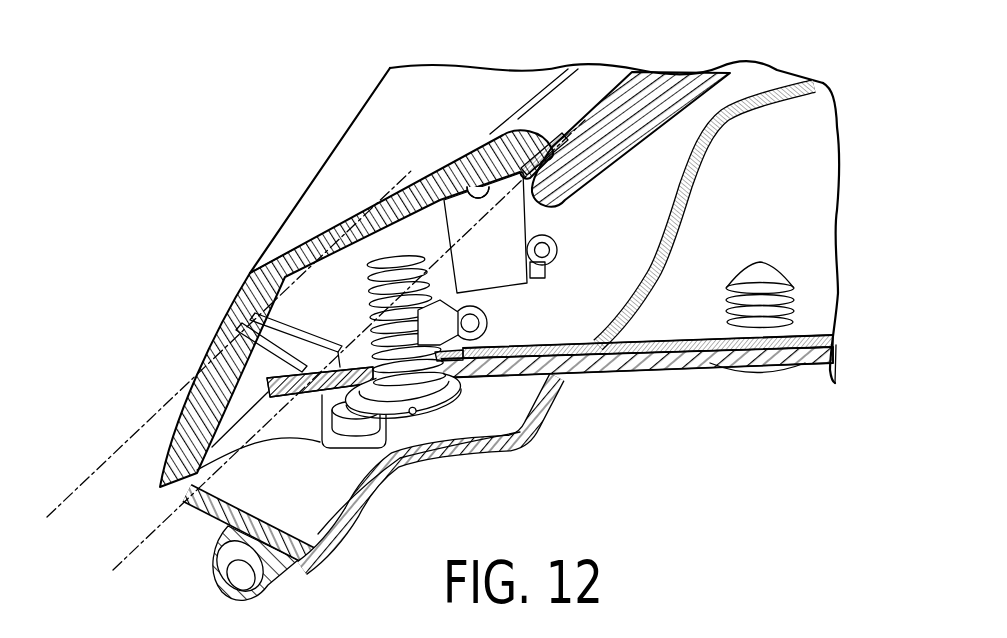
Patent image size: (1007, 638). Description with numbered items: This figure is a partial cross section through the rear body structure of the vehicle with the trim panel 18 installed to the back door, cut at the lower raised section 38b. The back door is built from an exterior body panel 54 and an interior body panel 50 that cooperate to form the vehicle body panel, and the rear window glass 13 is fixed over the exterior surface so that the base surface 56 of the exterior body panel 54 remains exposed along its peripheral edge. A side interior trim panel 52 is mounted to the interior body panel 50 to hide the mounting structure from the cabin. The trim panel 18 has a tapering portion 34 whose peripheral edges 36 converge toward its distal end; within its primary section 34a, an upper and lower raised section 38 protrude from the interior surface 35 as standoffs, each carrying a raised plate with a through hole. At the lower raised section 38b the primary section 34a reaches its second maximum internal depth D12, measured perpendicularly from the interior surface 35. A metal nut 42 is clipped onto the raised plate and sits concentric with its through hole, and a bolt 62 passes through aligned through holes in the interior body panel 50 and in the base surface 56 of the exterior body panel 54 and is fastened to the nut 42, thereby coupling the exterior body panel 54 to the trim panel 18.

The rear window glass 13 is at (690, 78).
The trim panel 18 is at (441, 80).
The tapering portion 34 is at (294, 154).
The primary section 34a is at (281, 197).
The interior surface 35 is at (470, 180).
The peripheral edges 36 is at (594, 88).
The raised section 38 is at (510, 222).
The lower raised section 38b is at (240, 352).
The nut 42 is at (562, 257).
The interior body panel 50 is at (792, 251).
The side interior trim panel 52 is at (831, 378).
The exterior body panel 54 is at (755, 86).
The base surface 56 is at (500, 340).
The bolt 62 is at (430, 405).
The maximum internal depth D12 is at (123, 558).